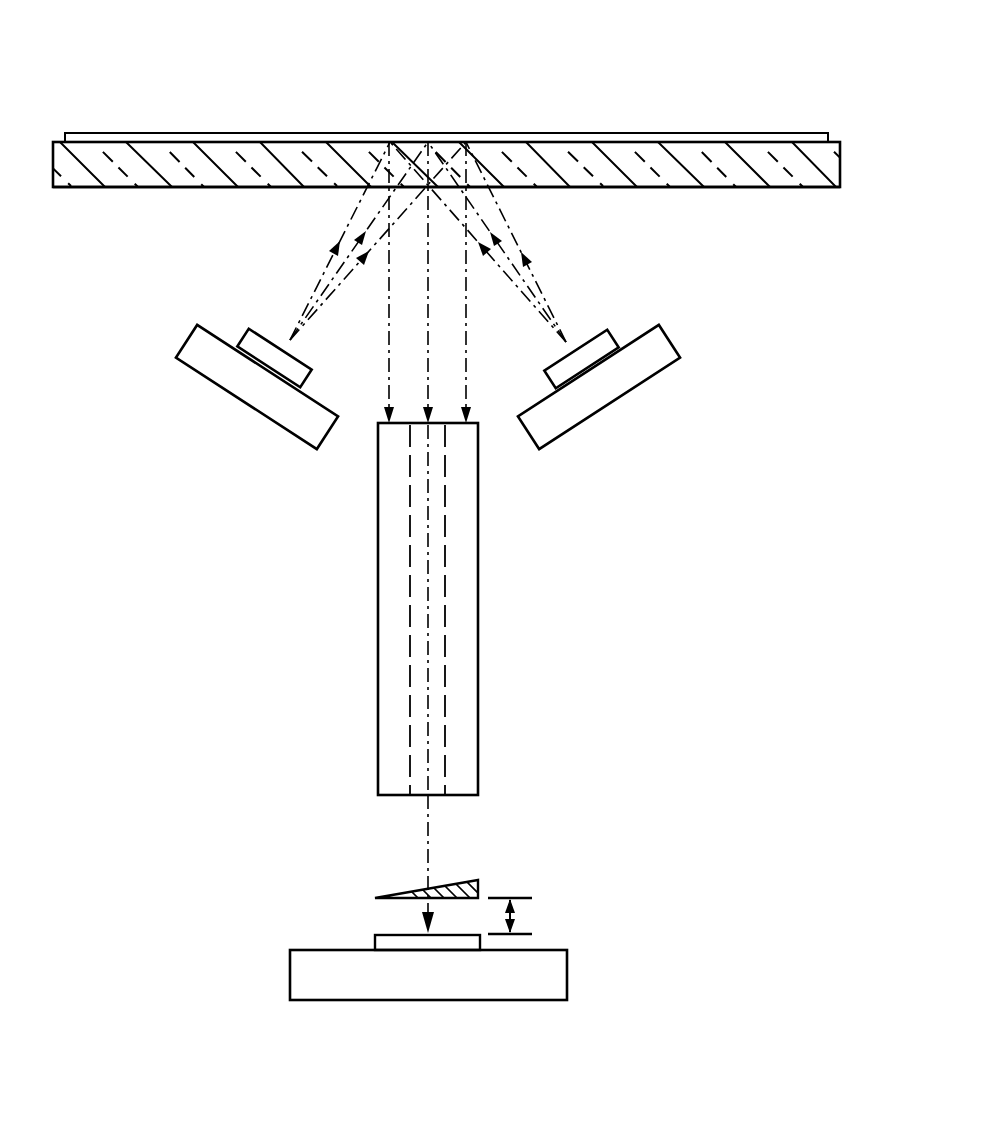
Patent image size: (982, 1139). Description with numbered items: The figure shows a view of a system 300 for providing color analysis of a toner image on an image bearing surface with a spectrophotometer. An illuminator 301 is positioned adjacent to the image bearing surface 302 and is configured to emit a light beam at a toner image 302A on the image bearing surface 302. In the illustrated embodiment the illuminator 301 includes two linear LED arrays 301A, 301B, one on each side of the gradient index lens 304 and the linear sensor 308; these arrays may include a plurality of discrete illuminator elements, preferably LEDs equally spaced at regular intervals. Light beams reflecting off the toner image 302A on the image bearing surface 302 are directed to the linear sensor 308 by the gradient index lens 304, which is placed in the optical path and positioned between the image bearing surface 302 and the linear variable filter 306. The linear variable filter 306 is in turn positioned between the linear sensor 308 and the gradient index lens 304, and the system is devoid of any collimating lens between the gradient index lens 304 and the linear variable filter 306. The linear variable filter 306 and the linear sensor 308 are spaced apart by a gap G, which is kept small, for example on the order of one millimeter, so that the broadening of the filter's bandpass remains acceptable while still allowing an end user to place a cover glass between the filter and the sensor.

The system 300 is at (166, 68).
The image bearing surface 302 is at (251, 188).
The toner image 302A is at (490, 188).
The illuminator 301 is at (272, 347).
The linear LED array 301A is at (252, 398).
The linear LED array 301B is at (610, 402).
The gradient index lens 304 is at (478, 610).
The linear variable filter 306 is at (478, 887).
The linear sensor 308 is at (375, 943).
The gap G is at (513, 913).